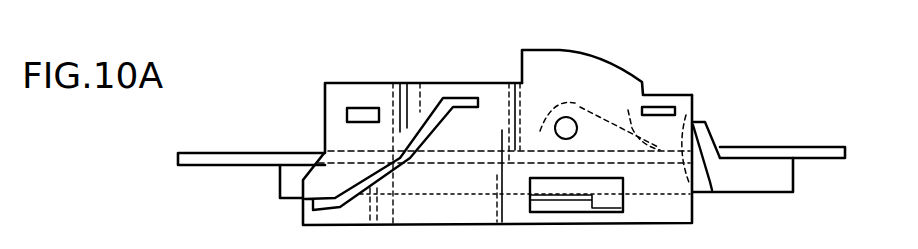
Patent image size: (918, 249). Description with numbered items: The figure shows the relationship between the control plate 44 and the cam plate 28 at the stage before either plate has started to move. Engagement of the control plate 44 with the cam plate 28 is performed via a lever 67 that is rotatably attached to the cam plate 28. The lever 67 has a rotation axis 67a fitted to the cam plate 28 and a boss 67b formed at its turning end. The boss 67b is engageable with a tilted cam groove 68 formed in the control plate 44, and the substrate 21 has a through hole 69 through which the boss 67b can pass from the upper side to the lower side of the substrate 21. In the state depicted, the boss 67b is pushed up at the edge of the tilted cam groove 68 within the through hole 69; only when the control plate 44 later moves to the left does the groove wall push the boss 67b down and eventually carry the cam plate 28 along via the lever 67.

The substrate 21 is at (178, 153).
The cam plate 28 is at (324, 85).
The control plate 44 is at (793, 193).
The lever 67 is at (572, 100).
The rotation axis 67a is at (557, 121).
The boss 67b is at (621, 128).
The tilted cam groove 68 is at (707, 193).
The through hole 69 is at (705, 98).